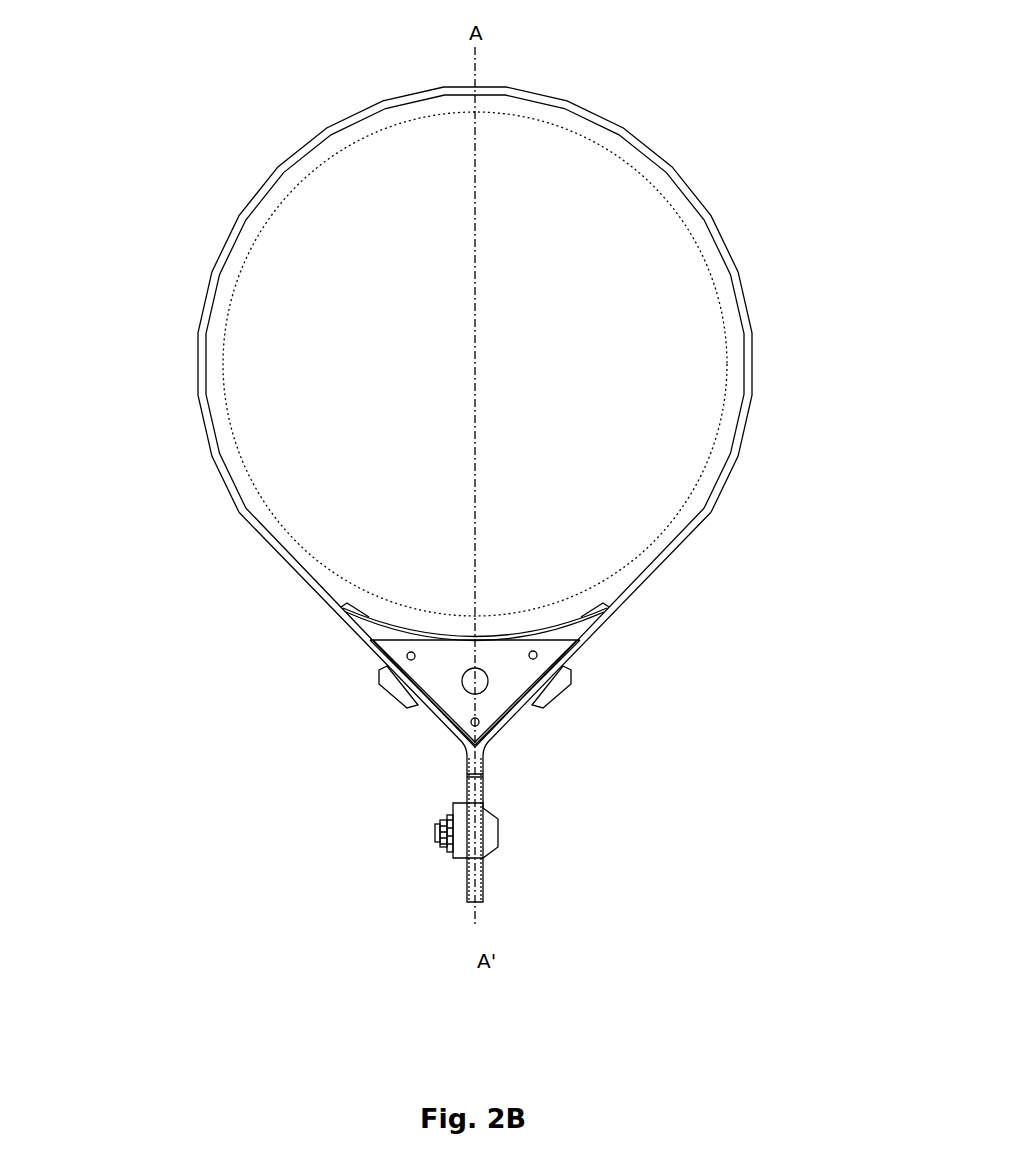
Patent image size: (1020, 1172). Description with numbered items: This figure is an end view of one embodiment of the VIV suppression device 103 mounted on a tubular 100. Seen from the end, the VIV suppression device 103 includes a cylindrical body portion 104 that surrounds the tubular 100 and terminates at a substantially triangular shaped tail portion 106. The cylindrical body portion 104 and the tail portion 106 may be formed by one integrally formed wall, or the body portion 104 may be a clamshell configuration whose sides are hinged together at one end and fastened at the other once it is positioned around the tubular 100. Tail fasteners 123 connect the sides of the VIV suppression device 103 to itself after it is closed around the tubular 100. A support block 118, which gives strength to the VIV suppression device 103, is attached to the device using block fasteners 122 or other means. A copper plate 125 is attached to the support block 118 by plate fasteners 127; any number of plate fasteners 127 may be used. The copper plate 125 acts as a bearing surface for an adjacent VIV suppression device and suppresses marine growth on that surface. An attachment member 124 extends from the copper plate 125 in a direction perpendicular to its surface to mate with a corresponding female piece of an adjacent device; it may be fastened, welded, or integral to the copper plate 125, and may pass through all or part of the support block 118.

The tubular 100 is at (670, 198).
The VIV suppression device 103 is at (754, 301).
The cylindrical body portion 104 is at (225, 246).
The tail portion 106 is at (457, 740).
The support block 118 is at (598, 616).
The block fasteners 122 is at (378, 690).
The tail fasteners 123 is at (501, 830).
The attachment member 124 is at (490, 690).
The copper plate 125 is at (563, 647).
The plate fasteners 127 is at (521, 650).